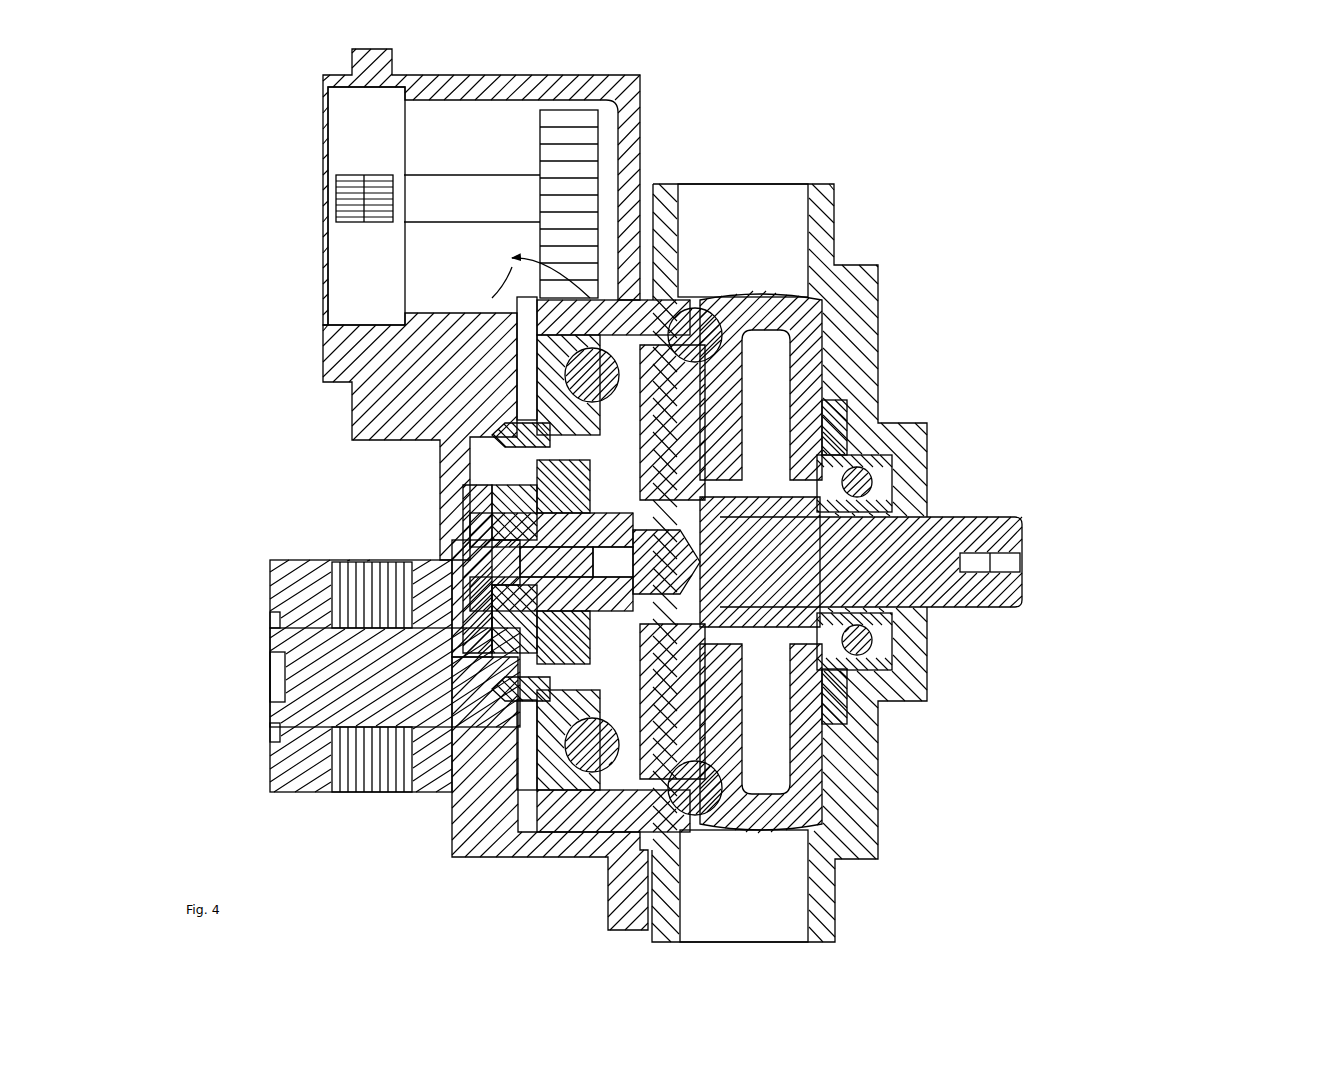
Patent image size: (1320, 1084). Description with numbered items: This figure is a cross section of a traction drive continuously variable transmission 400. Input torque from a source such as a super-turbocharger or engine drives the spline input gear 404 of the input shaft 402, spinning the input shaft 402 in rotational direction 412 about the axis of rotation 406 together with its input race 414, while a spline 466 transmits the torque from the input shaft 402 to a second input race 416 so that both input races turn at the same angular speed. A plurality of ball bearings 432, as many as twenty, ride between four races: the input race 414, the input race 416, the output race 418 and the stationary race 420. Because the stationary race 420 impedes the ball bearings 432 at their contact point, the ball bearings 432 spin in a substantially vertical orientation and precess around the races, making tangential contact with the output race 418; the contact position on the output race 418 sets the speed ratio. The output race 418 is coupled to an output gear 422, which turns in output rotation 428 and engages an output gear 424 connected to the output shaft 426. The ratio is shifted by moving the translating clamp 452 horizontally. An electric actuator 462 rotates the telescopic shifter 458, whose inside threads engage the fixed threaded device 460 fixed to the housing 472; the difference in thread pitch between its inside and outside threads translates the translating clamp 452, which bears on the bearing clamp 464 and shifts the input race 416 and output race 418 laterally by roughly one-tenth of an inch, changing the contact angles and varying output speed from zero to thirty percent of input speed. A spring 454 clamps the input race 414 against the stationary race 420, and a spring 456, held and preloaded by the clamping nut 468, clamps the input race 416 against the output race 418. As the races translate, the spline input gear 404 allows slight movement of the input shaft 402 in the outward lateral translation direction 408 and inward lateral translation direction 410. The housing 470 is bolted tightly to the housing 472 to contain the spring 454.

The traction drive continuously variable transmission 400 is at (1012, 184).
The input shaft 402 is at (905, 445).
The spline input gear 404 is at (990, 518).
The axis of rotation 406 is at (1037, 562).
The outward lateral translation direction 408 is at (973, 647).
The inward lateral translation direction 410 is at (953, 455).
The rotational direction 412 is at (1042, 612).
The input race 414 is at (800, 808).
The input race 416 is at (745, 720).
The output race 418 is at (605, 855).
The stationary race 420 is at (590, 828).
The output gear 422 is at (535, 795).
The output gear 424 is at (575, 138).
The output shaft 426 is at (430, 185).
The output rotation 428 is at (498, 302).
The ball bearings 432 is at (697, 310).
The translating clamp 452 is at (795, 370).
The spring 454 is at (830, 420).
The spring 456 is at (470, 472).
The telescopic shifter 458 is at (460, 637).
The fixed threaded device 460 is at (465, 552).
The electric actuator 462 is at (322, 722).
The bearing clamp 464 is at (500, 735).
The spline 466 is at (740, 650).
The clamping nut 468 is at (527, 667).
The housing 470 is at (865, 840).
The housing 472 is at (608, 888).